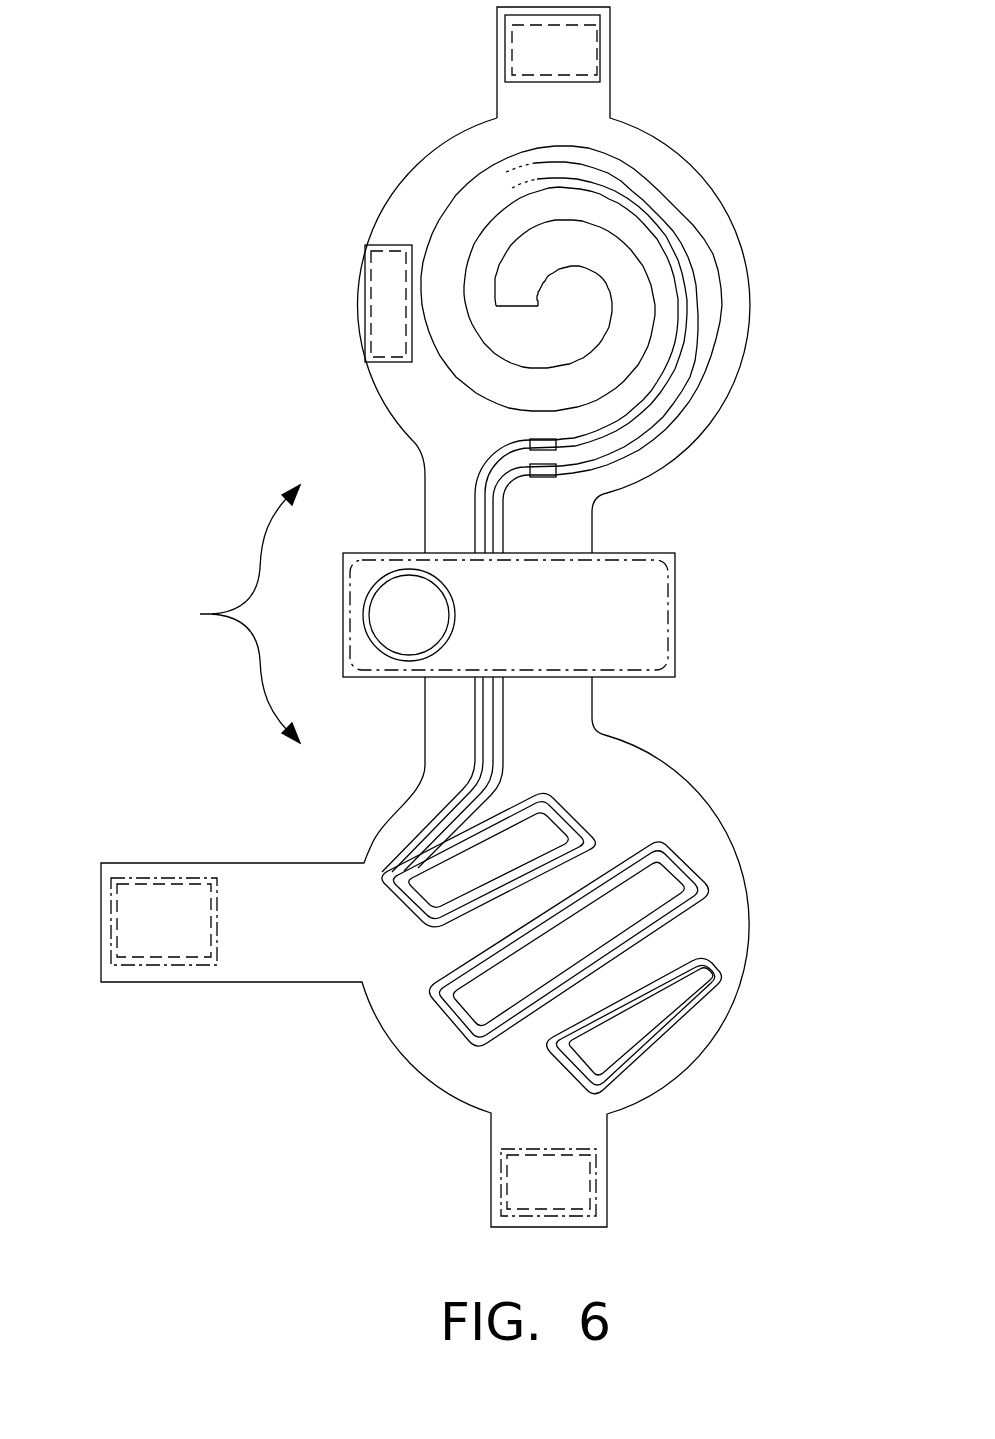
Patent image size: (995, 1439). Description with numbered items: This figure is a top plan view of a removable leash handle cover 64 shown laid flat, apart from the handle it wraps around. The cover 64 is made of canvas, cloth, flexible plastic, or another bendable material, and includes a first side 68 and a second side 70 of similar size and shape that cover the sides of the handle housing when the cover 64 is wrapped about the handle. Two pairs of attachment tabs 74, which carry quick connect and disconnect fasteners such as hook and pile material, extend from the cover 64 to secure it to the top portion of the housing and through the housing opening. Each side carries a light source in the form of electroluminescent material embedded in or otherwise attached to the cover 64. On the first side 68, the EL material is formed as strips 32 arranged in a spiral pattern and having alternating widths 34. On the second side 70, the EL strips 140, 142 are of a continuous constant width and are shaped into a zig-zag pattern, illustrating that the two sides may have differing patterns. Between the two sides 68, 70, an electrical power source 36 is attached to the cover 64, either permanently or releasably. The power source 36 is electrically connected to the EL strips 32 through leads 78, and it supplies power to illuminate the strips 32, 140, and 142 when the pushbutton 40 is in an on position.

The EL strips 32 is at (690, 216).
The alternating widths 34 is at (712, 350).
The electrical power source 36 is at (676, 617).
The pushbutton 40 is at (392, 615).
The cover 64 is at (230, 614).
The first side 68 is at (740, 380).
The second side 70 is at (746, 915).
The attachment tabs 74 is at (597, 42).
The leads 78 is at (493, 528).
The EL strip 140 is at (676, 843).
The EL strip 142 is at (684, 862).